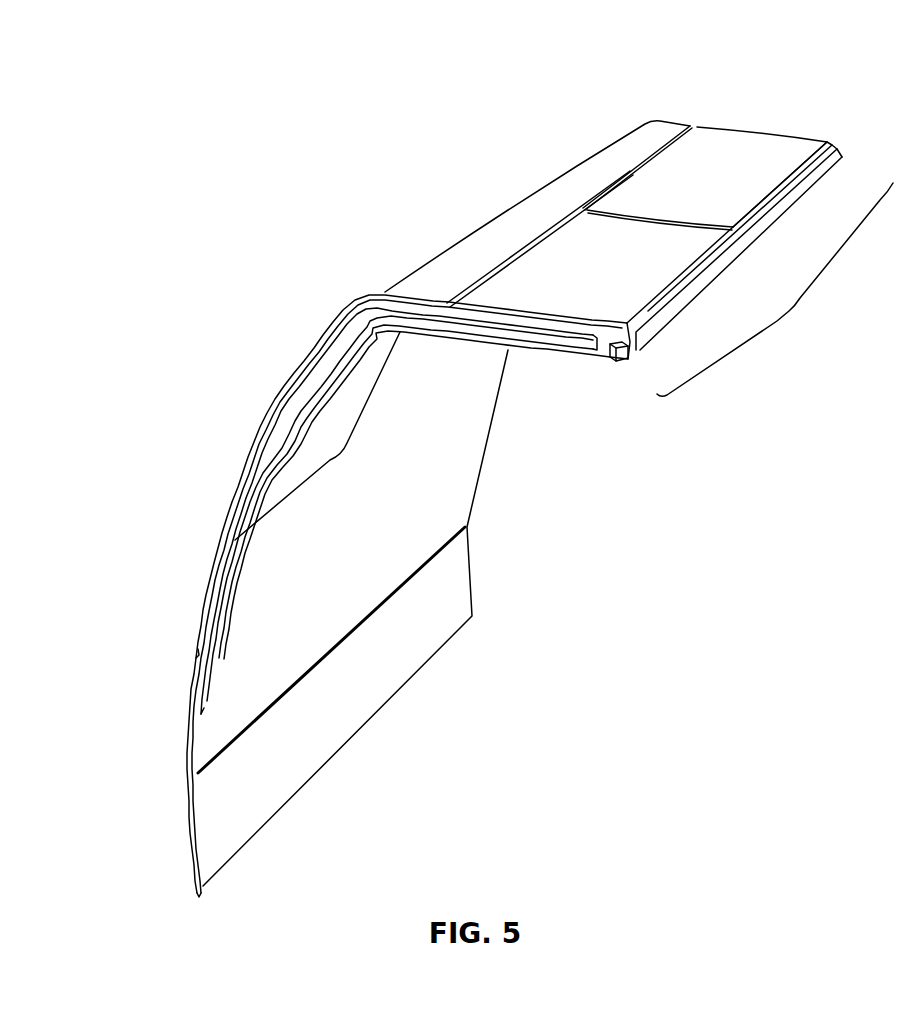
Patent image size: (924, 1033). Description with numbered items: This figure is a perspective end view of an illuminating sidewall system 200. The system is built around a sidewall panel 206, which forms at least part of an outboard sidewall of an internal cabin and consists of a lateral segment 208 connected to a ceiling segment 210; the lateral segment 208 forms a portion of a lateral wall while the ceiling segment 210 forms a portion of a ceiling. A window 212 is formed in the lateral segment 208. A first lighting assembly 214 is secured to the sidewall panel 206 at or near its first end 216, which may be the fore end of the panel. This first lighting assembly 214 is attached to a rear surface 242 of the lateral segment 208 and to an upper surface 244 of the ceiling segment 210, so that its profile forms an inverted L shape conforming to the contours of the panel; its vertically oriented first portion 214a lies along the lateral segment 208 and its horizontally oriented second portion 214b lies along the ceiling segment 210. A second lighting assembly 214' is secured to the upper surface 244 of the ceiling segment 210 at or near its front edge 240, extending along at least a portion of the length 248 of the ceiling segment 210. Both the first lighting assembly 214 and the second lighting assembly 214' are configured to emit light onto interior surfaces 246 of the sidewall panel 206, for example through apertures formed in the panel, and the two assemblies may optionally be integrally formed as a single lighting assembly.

The illuminating sidewall system 200 is at (232, 292).
The sidewall panel 206 is at (478, 496).
The lateral segment 208 is at (447, 518).
The ceiling segment 210 is at (632, 142).
The window 212 is at (310, 422).
The first lighting assembly 214 is at (379, 594).
The second lighting assembly 214' is at (739, 246).
The first portion 214a is at (203, 598).
The second portion 214b is at (557, 350).
The first end 216 is at (187, 710).
The front edge 240 is at (757, 240).
The rear surface 242 is at (192, 667).
The upper surface 244 is at (413, 323).
The interior surfaces 246 is at (597, 363).
The length 248 is at (775, 289).